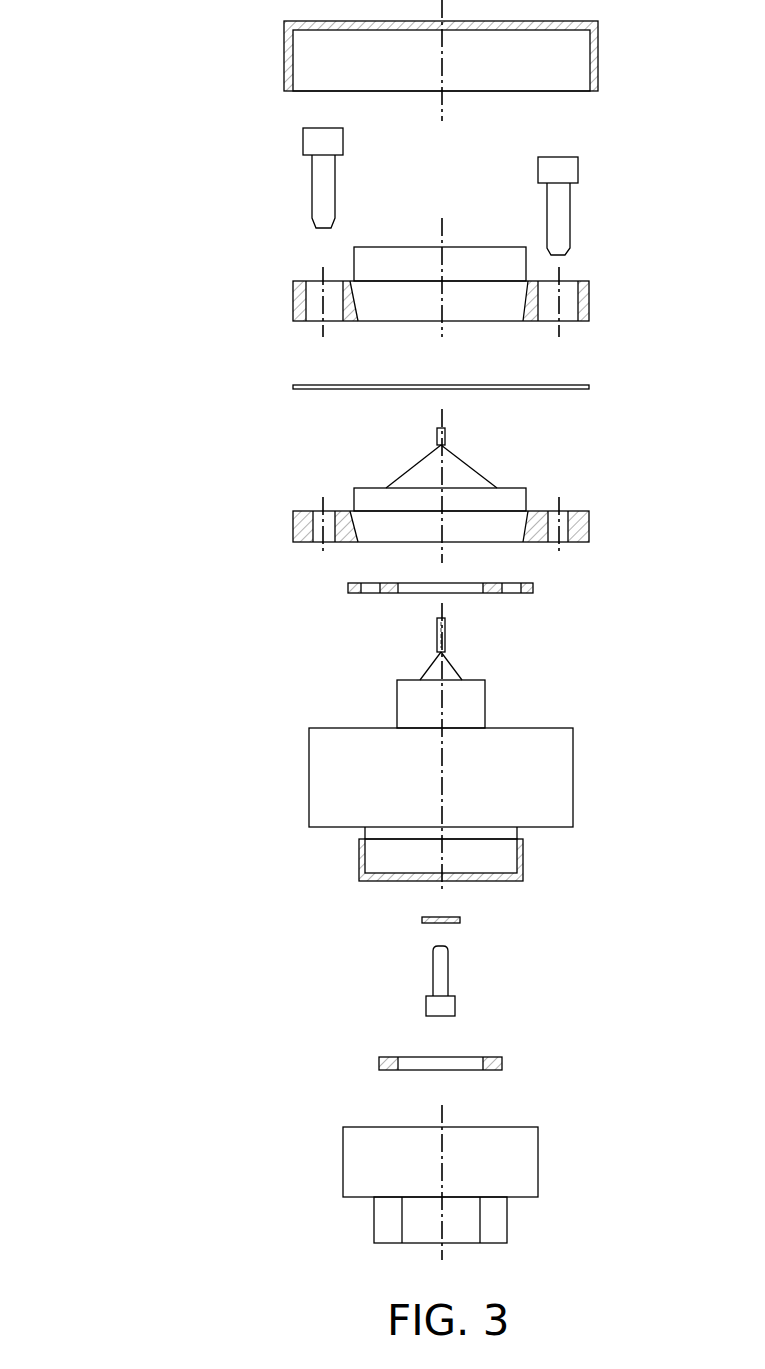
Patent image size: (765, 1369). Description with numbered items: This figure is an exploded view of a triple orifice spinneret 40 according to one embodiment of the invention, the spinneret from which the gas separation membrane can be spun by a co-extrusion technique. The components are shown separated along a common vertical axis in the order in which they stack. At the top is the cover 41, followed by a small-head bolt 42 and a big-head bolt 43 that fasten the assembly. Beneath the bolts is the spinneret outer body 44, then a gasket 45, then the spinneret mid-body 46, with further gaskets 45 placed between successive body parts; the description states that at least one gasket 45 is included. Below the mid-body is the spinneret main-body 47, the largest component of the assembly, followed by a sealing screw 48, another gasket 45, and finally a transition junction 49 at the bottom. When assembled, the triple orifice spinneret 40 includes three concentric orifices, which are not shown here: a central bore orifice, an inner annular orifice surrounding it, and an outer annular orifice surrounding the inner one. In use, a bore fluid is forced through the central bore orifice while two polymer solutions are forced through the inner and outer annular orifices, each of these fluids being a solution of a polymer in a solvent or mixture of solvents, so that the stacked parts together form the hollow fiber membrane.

The triple orifice spinneret 40 is at (133, 156).
The cover 41 is at (598, 53).
The small-head bolt 42 is at (335, 186).
The big-head bolt 43 is at (570, 213).
The spinneret outer body 44 is at (589, 302).
The gasket 45 is at (589, 387).
The spinneret mid-body 46 is at (589, 526).
The spinneret main-body 47 is at (573, 765).
The sealing screw 48 is at (448, 977).
The transition junction 49 is at (538, 1163).